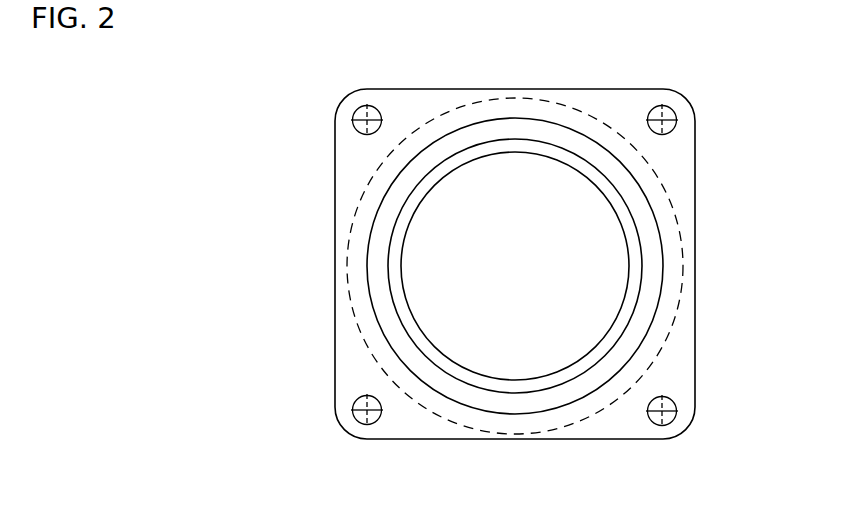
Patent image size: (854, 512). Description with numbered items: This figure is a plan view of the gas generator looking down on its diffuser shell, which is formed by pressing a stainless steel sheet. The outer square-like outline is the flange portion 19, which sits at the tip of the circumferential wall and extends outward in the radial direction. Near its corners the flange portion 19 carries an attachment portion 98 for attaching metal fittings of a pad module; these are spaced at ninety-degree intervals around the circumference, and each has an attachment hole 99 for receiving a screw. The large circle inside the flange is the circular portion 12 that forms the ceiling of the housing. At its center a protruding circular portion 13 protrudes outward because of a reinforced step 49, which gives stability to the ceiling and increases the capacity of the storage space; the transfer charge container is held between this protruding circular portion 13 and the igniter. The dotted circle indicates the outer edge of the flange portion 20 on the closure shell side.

The flange portion 19 is at (697, 140).
The flange portion on closure shell side 20 is at (613, 125).
The circular portion 12 is at (535, 130).
The reinforced step 49 is at (435, 172).
The protruding circular portion 13 is at (483, 163).
The attachment portion 98 is at (350, 397).
The attachment hole 99 is at (658, 424).